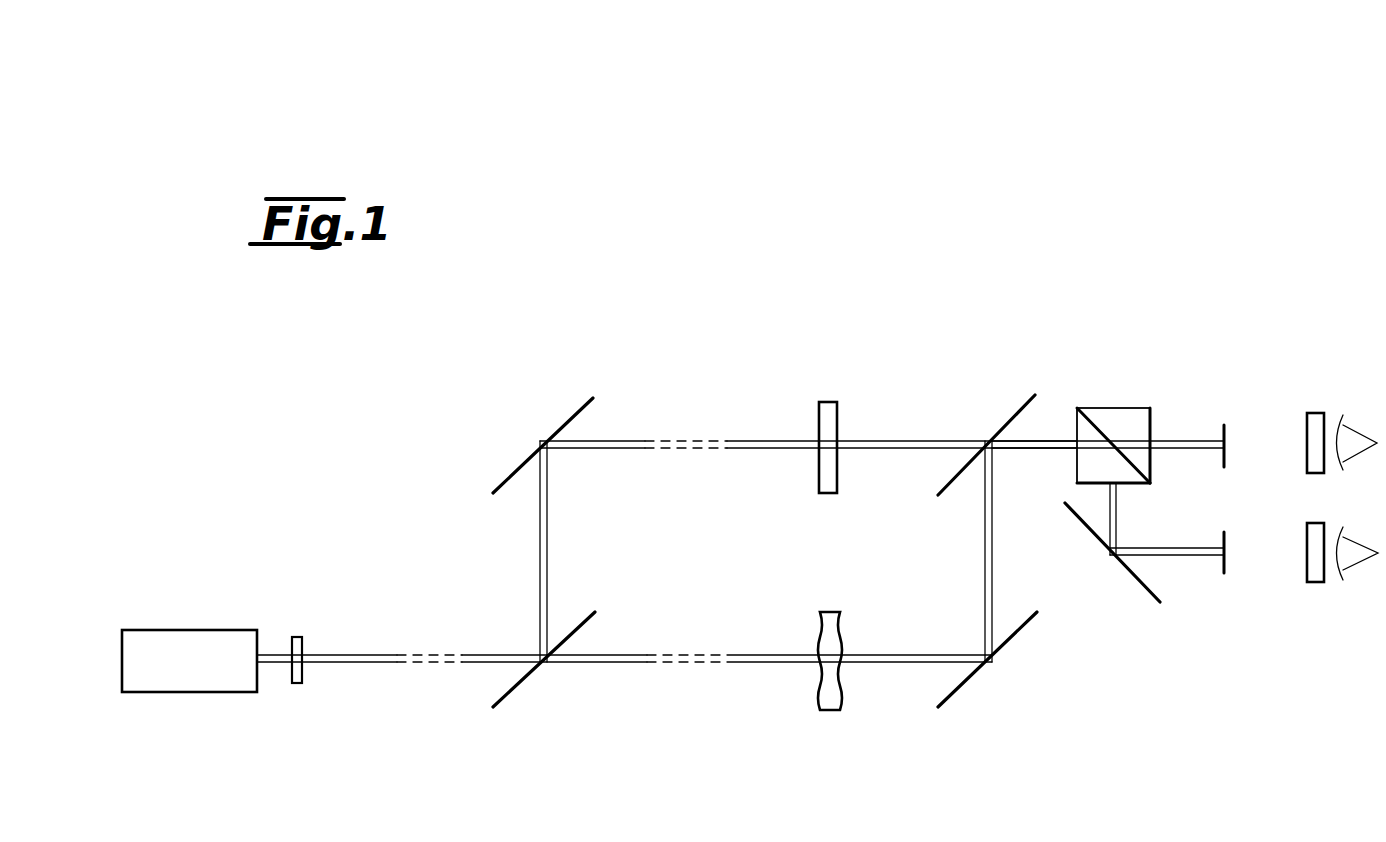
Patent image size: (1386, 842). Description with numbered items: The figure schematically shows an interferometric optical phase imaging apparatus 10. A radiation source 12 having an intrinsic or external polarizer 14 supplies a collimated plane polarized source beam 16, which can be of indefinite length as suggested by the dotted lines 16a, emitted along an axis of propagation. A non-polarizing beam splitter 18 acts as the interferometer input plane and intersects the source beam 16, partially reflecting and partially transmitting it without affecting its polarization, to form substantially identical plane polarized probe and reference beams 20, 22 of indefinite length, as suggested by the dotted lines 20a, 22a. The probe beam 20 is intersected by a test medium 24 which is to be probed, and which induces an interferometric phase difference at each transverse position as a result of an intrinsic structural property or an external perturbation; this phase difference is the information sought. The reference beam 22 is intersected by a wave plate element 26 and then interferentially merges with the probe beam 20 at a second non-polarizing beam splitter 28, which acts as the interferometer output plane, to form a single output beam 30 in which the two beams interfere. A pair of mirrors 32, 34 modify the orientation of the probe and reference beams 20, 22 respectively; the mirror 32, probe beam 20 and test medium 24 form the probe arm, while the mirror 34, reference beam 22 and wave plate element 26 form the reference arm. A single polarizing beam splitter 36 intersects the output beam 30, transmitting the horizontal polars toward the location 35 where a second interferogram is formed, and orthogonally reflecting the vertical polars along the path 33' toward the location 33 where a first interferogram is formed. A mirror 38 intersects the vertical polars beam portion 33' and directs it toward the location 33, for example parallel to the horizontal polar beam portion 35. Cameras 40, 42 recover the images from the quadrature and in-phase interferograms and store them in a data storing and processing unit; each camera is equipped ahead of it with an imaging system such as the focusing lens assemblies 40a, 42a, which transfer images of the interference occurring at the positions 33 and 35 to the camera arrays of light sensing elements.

The phase imaging apparatus 10 is at (643, 316).
The radiation source 12 is at (185, 630).
The polarizer 14 is at (297, 684).
The source beam 16 is at (343, 654).
The dotted lines 16a is at (433, 664).
The non-polarizing beam splitter 18 is at (510, 698).
The probe beam 20 is at (608, 665).
The dotted lines 20a is at (698, 665).
The reference beam 22 is at (763, 440).
The dotted lines 22a is at (670, 440).
The test medium 24 is at (820, 682).
The wave plate element 26 is at (837, 405).
The second non-polarizing beam splitter 28 is at (1005, 425).
The output beam 30 is at (1037, 442).
The mirror 32 is at (962, 688).
The first interferogram location 33 is at (1213, 587).
The vertical polars beam portion 33' is at (1191, 521).
The mirror 34 is at (517, 468).
The second interferogram location 35 is at (1225, 428).
The polarizing beam splitter 36 is at (1103, 430).
The mirror 38 is at (1140, 585).
The camera 40 is at (1365, 565).
The focusing lens assembly 40a is at (1305, 590).
The camera 42 is at (1345, 420).
The focusing lens assembly 42a is at (1309, 407).